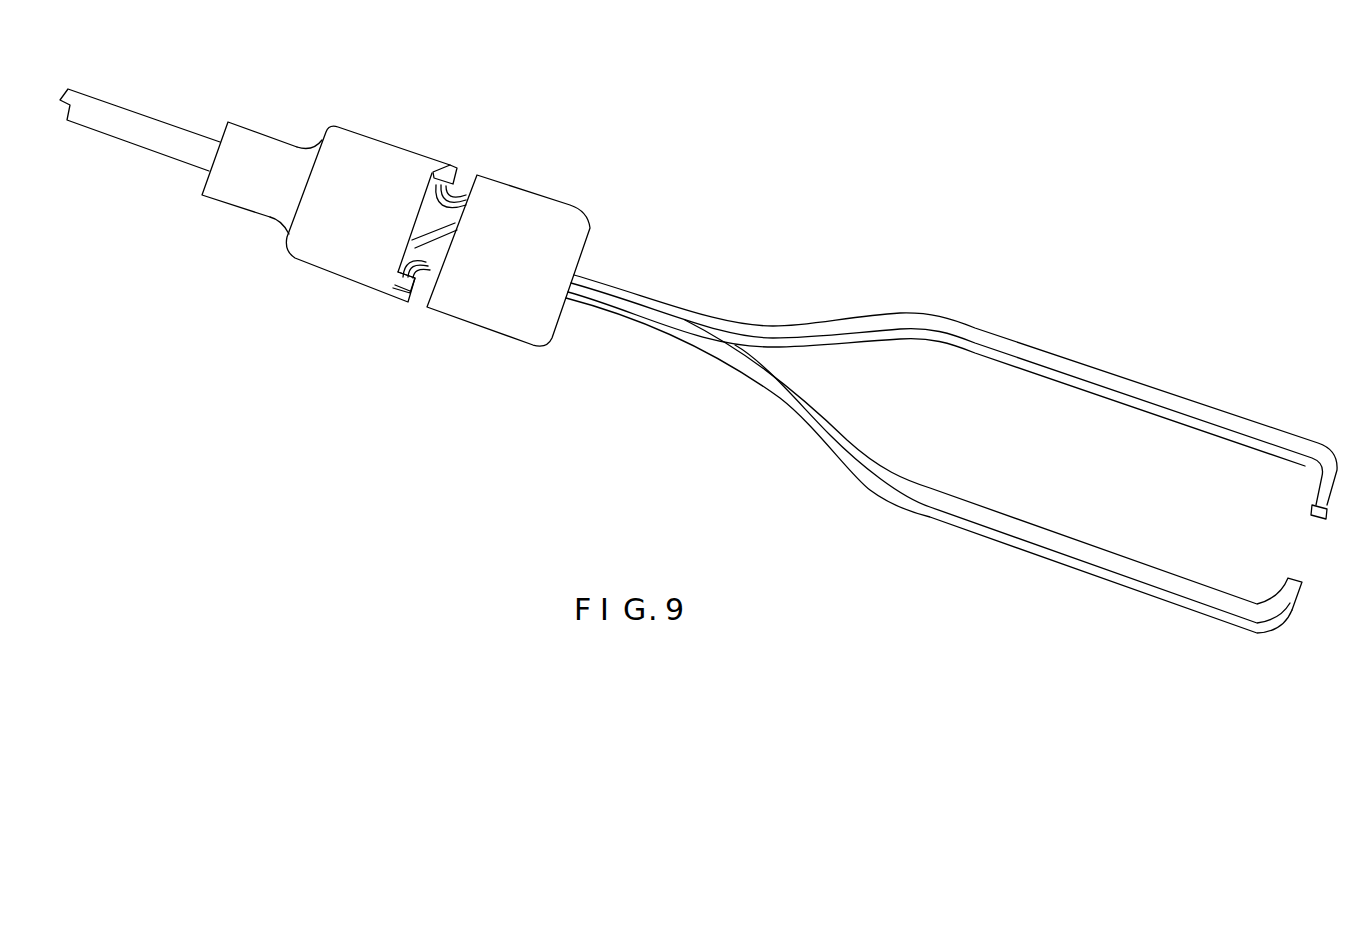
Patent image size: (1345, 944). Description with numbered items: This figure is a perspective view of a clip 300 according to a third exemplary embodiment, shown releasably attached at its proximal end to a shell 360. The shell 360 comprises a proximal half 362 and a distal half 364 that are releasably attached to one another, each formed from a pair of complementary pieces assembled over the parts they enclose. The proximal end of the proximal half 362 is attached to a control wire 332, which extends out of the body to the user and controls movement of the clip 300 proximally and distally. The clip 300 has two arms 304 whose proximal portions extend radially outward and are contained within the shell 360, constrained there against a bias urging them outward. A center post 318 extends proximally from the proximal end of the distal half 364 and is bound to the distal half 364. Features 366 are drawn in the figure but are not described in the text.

The clip 300 is at (913, 180).
The arms 304 is at (1058, 362).
The center post 318 is at (440, 237).
The control wire 332 is at (162, 121).
The shell 360 is at (545, 115).
The proximal half 362 is at (350, 127).
The distal half 364 is at (555, 218).
The tabs 366 is at (450, 167).